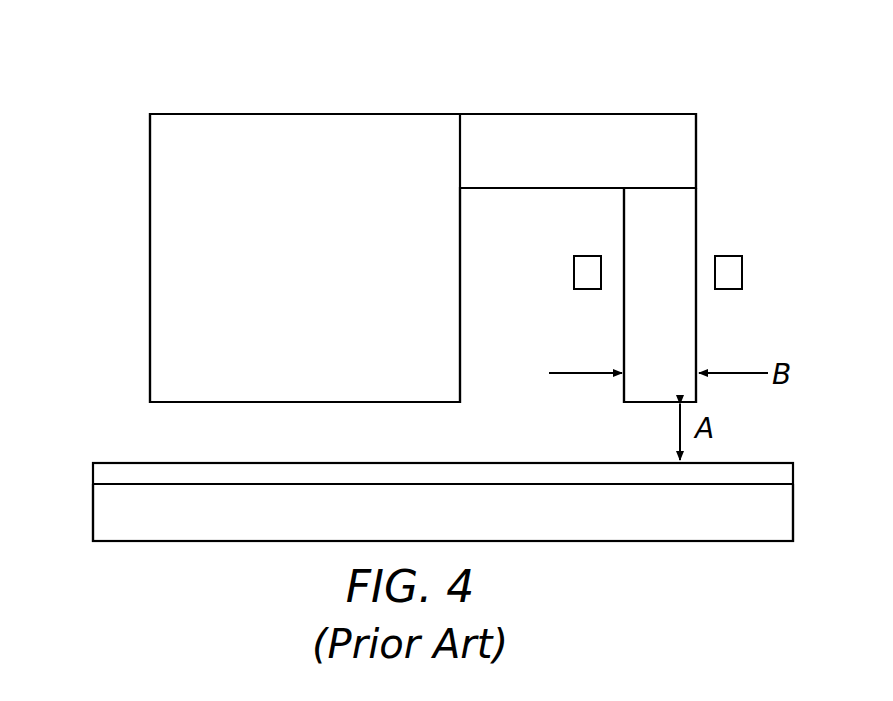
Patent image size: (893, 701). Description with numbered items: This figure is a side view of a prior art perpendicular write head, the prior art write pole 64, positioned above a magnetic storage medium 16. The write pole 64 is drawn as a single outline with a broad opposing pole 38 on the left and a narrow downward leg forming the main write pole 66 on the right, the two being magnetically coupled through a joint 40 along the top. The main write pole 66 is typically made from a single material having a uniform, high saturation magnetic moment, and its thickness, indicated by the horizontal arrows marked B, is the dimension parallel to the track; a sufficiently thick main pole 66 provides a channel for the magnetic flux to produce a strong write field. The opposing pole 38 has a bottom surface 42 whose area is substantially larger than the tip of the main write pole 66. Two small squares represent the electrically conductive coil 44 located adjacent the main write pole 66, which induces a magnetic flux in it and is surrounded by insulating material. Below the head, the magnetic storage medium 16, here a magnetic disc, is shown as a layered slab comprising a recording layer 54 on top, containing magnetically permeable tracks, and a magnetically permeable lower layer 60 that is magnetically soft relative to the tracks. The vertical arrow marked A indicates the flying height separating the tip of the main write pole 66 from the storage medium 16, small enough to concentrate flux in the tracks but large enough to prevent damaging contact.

The prior art write pole 64 is at (392, 88).
The opposing pole 38 is at (303, 297).
The joint 40 is at (555, 168).
The main write pole 66 is at (673, 332).
The bottom surface 42 is at (250, 403).
The electrically conductive coil 44 is at (580, 274).
The magnetic storage medium 16 is at (92, 450).
The lower layer 60 is at (213, 530).
The recording layer 54 is at (418, 472).